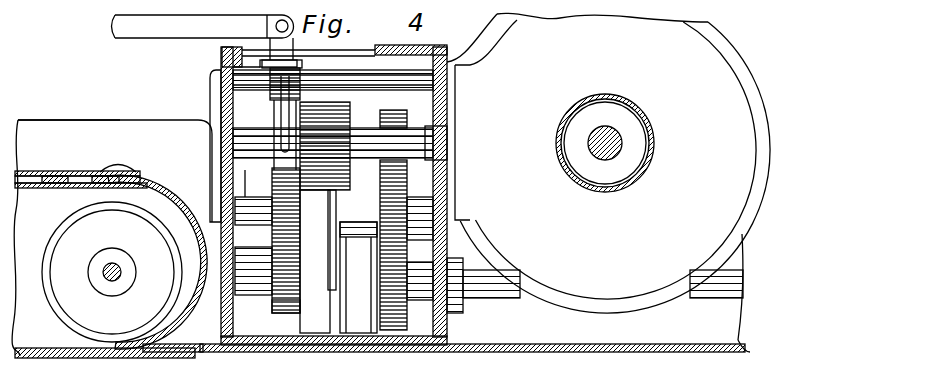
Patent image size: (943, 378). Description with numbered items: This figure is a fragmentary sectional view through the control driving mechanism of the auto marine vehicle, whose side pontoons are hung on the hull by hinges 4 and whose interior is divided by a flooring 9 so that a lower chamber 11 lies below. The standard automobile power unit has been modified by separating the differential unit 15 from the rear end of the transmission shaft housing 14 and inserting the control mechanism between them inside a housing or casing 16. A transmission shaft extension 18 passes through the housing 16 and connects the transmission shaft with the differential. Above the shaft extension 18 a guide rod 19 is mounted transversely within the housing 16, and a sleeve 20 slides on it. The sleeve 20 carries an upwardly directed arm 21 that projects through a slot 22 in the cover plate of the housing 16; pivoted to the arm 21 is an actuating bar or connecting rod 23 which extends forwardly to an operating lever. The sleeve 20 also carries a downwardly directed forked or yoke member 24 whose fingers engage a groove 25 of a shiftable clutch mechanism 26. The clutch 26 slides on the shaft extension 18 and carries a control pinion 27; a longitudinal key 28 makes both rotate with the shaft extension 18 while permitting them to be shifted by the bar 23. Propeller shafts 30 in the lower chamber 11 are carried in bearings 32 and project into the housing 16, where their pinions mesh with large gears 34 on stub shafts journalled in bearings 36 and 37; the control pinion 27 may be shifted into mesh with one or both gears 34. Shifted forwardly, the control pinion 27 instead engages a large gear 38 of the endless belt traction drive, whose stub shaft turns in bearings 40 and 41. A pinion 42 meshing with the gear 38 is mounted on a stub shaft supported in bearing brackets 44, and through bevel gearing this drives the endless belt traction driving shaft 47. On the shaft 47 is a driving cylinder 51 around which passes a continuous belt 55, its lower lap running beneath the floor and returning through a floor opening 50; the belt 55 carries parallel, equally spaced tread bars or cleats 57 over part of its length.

The hinges 4 is at (55, 150).
The flooring 9 is at (687, 347).
The lower chamber 11 is at (643, 335).
The transmission shaft housing 14 is at (81, 133).
The differential unit 15 is at (615, 167).
The housing or casing 16 is at (455, 337).
The transmission shaft extension 18 is at (450, 130).
The guide rod 19 is at (453, 80).
The sleeve 20 is at (235, 70).
The arm 21 is at (222, 47).
The slot 22 is at (357, 55).
The actuating bar or connecting rod 23 is at (163, 28).
The forked or yoke member 24 is at (262, 104).
The groove 25 is at (235, 157).
The shiftable clutch mechanism 26 is at (240, 123).
The control pinion 27 is at (333, 140).
The longitudinal key 28 is at (433, 143).
The propeller shafts 30 is at (735, 278).
The bearings 32 is at (477, 280).
The large gears 34 is at (407, 185).
The bearings 36 is at (428, 218).
The bearings 37 is at (360, 277).
The large gear 38 is at (283, 197).
The bearings 40 is at (320, 261).
The bearings 41 is at (233, 190).
The pinion 42 is at (290, 312).
The bearing brackets 44 is at (248, 287).
The endless belt traction driving shaft 47 is at (113, 262).
The opening 50 is at (158, 342).
The driving cylinder 51 is at (68, 340).
The continuous belt 55 is at (63, 350).
The tread bars or cleats 57 is at (118, 148).